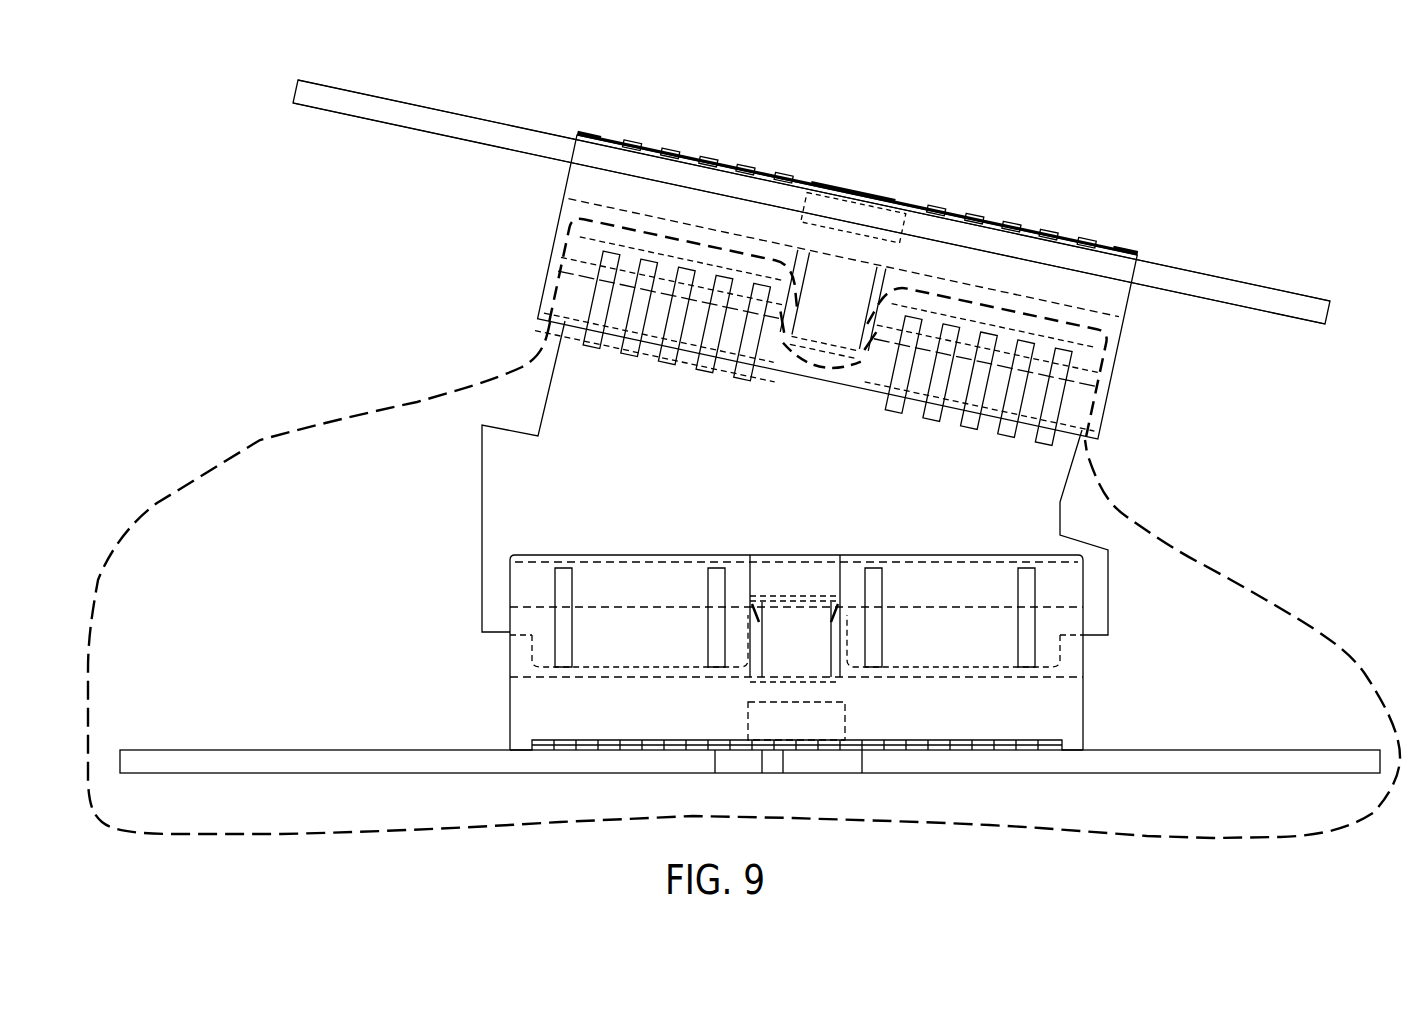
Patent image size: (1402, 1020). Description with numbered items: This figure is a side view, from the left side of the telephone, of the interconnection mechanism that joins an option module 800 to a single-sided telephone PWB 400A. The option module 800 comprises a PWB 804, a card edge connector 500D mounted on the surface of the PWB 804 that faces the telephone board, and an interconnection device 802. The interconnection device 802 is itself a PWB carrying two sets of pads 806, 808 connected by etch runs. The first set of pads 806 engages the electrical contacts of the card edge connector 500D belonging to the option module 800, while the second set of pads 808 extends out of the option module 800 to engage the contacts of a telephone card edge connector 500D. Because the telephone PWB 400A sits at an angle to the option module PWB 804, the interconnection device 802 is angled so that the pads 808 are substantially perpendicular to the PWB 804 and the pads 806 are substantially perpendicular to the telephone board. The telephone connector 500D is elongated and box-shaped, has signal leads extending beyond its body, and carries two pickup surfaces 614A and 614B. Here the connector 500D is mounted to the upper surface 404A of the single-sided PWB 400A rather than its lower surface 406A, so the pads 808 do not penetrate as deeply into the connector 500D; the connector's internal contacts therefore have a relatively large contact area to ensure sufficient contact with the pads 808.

The single-sided PWB 400A is at (296, 90).
The upper surface 404A is at (418, 104).
The lower surface 406A is at (385, 127).
The card edge connector 500D is at (566, 188).
The pickup surface 614A is at (850, 233).
The pickup surface 614B is at (823, 333).
The second set of pads 808 is at (665, 363).
The option module 800 is at (260, 438).
The interconnection device 802 is at (480, 474).
The PWB 804 is at (278, 750).
The first set of pads 806 is at (720, 556).